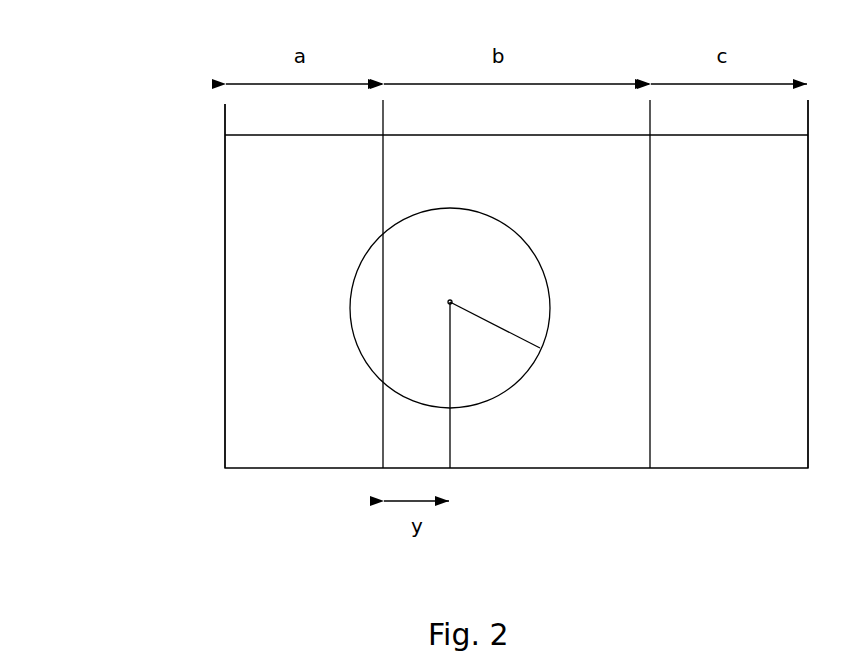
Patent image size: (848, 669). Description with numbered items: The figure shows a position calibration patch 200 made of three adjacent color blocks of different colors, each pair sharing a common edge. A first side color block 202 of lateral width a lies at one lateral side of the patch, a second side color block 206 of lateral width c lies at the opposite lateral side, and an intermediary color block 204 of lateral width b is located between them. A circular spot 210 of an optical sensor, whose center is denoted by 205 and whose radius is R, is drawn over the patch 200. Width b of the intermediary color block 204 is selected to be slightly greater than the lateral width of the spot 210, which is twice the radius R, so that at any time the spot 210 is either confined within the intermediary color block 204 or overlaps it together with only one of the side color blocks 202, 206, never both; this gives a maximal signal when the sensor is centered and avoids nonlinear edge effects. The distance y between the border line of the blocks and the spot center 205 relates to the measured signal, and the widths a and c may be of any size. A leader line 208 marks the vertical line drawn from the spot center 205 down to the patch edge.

The position calibration patch 200 is at (200, 300).
The first side color block 202 is at (225, 201).
The intermediary color block 204 is at (583, 468).
The center of the spot 205 is at (493, 222).
The second side color block 206 is at (750, 468).
The center line 208 is at (452, 434).
The spot 210 is at (355, 347).